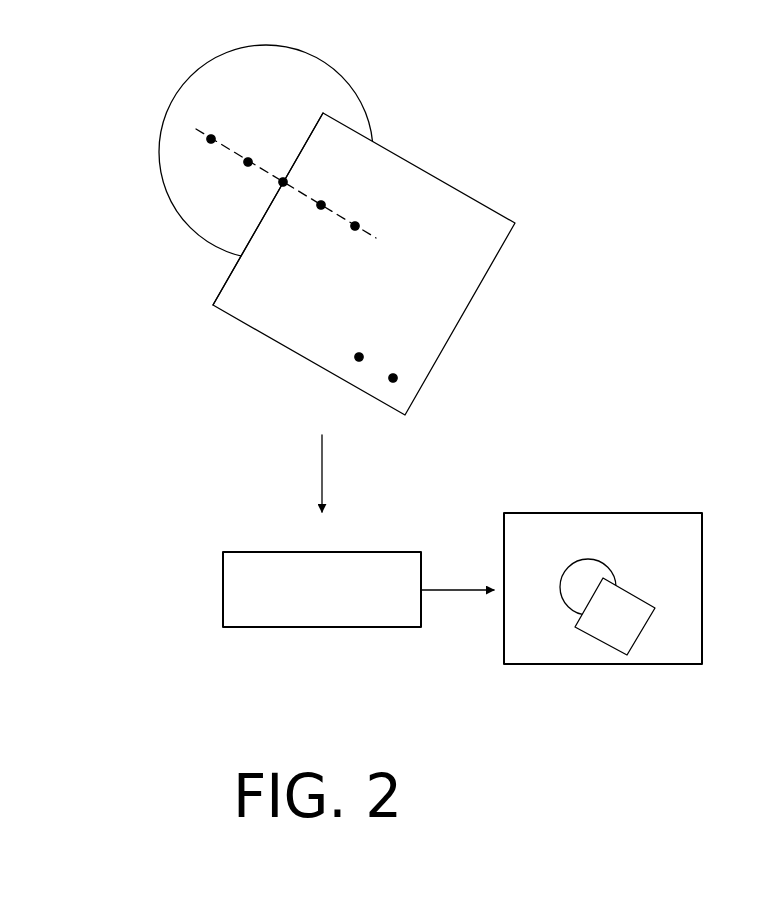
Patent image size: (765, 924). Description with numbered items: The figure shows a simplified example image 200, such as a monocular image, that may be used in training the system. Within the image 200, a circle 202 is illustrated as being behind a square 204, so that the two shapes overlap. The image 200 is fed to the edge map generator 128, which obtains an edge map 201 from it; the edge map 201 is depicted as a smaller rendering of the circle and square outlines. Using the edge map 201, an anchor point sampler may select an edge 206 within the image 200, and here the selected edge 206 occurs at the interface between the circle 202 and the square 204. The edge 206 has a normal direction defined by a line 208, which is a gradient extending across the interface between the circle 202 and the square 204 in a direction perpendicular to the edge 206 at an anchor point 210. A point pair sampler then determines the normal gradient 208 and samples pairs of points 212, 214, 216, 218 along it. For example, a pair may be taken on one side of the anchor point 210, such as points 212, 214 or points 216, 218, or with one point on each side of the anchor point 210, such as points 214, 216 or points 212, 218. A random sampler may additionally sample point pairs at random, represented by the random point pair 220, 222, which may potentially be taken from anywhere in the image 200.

The image 200 is at (81, 44).
The circle 202 is at (353, 81).
The square 204 is at (512, 252).
The edge 206 is at (219, 281).
The line 208 is at (380, 238).
The anchor point 210 is at (284, 193).
The point 212 is at (356, 215).
The point 214 is at (320, 193).
The point 216 is at (248, 173).
The point 218 is at (212, 129).
The random point 220 is at (396, 366).
The random point 222 is at (359, 346).
The edge map generator 128 is at (282, 586).
The edge map 201 is at (562, 549).